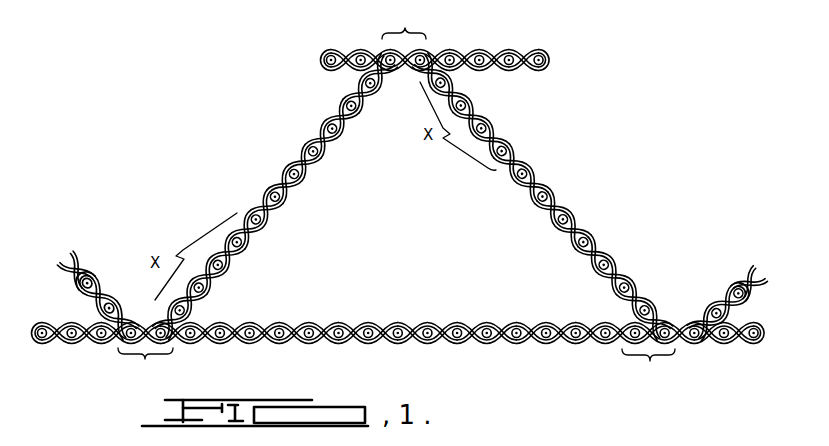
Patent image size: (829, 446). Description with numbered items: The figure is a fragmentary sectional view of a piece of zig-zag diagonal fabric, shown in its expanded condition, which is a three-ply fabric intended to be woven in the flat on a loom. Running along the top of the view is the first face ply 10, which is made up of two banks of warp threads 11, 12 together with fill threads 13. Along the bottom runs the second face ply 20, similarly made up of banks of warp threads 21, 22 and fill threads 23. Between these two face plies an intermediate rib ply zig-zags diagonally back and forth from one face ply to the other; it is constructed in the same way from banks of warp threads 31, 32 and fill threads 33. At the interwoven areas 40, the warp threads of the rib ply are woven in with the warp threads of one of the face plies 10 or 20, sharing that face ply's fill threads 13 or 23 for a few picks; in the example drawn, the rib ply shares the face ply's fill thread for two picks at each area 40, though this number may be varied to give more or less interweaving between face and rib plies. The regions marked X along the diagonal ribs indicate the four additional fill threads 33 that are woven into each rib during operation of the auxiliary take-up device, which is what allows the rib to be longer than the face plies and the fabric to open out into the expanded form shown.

The first face ply 10 is at (438, 58).
The warp threads 11 is at (515, 53).
The warp threads 12 is at (515, 73).
The fill threads 13 is at (496, 31).
The second face ply 20 is at (398, 337).
The warp threads 21 is at (336, 328).
The warp threads 22 is at (334, 345).
The fill threads 23 is at (277, 342).
The warp threads 31 is at (234, 258).
The warp threads 32 is at (214, 284).
The fill threads 33 is at (312, 147).
The interwoven areas 40 is at (396, 199).